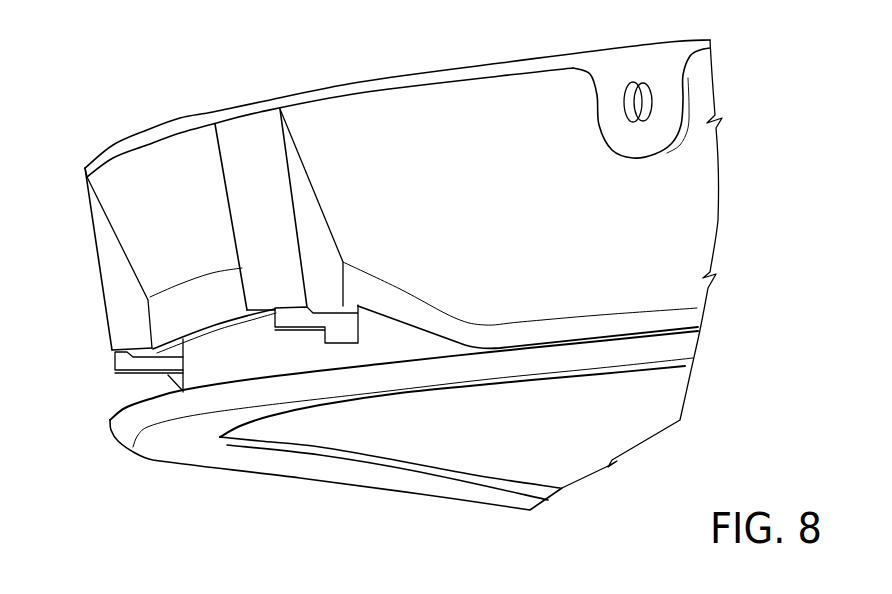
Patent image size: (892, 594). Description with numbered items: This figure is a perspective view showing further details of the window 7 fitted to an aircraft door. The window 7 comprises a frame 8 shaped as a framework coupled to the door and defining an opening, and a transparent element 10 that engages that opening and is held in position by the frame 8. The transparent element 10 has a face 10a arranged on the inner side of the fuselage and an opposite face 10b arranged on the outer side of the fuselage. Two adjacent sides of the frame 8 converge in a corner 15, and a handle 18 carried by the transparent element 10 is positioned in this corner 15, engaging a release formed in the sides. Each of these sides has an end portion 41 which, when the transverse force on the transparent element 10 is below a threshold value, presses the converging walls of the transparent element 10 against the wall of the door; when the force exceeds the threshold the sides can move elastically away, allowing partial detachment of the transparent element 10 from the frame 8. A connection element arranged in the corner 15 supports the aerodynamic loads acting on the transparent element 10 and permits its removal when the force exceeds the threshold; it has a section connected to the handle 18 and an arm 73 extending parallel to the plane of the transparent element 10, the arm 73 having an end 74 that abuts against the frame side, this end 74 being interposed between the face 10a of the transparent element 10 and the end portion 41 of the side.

The window 7 is at (733, 132).
The frame 8 is at (247, 142).
The transparent element 10 is at (651, 360).
The face 10a is at (440, 336).
The face 10b is at (461, 408).
The corner 15 is at (190, 410).
The handle 18 is at (216, 343).
The end portion 41 is at (125, 332).
The arm 73 is at (116, 379).
The end 74 is at (118, 341).